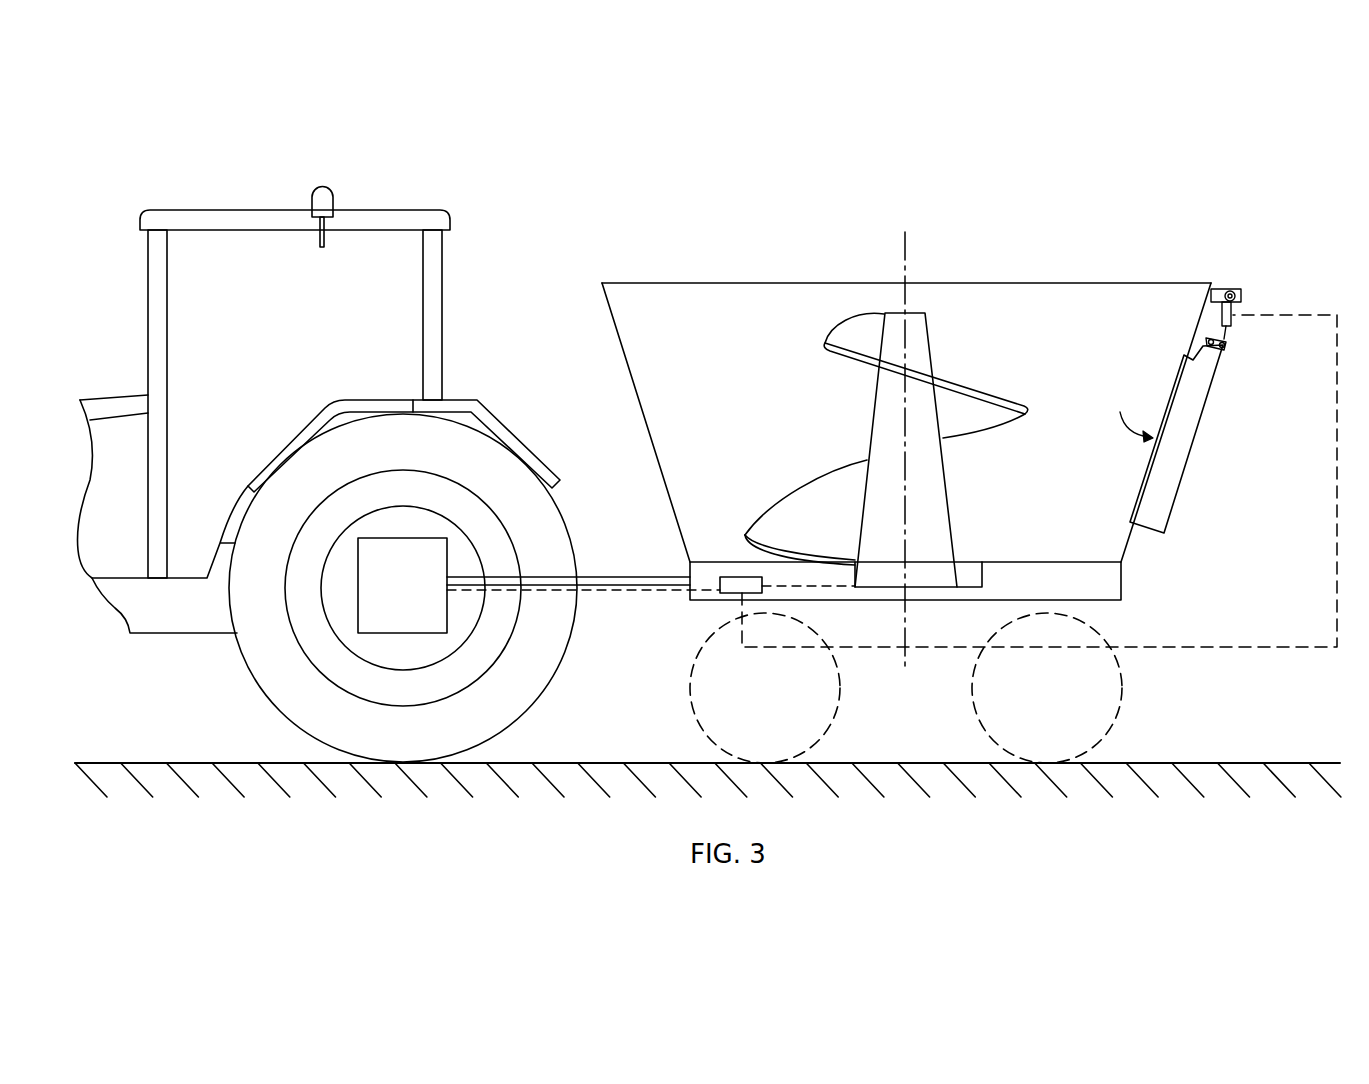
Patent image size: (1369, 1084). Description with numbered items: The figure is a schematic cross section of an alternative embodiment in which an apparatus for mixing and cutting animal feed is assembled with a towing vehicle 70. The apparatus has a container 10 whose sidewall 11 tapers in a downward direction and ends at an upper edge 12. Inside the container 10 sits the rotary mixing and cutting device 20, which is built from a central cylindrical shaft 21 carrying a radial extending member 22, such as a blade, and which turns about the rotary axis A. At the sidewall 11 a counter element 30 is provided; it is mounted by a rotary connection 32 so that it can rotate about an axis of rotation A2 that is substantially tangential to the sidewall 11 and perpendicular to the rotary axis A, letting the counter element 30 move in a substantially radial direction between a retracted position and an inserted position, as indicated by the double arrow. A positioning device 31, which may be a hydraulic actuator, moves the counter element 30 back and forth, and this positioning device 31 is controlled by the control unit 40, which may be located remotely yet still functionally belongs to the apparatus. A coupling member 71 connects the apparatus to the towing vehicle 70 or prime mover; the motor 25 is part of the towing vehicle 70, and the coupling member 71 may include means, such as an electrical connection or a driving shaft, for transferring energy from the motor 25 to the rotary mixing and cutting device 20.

The container 10 is at (849, 390).
The sidewall 11 is at (653, 447).
The upper edge 12 is at (728, 284).
The rotary mixing and cutting device 20 is at (921, 413).
The central cylindrical shaft 21 is at (922, 366).
The radial extending member 22 is at (940, 343).
The motor 25 is at (397, 585).
The counter element 30 is at (1166, 474).
The positioning device 31 is at (1230, 313).
The rotary connection 32 is at (1210, 349).
The control unit 40 is at (742, 585).
The towing vehicle 70 is at (363, 218).
The coupling member 71 is at (617, 580).
The rotary axis A is at (905, 250).
The axis of rotation A2 is at (1213, 343).